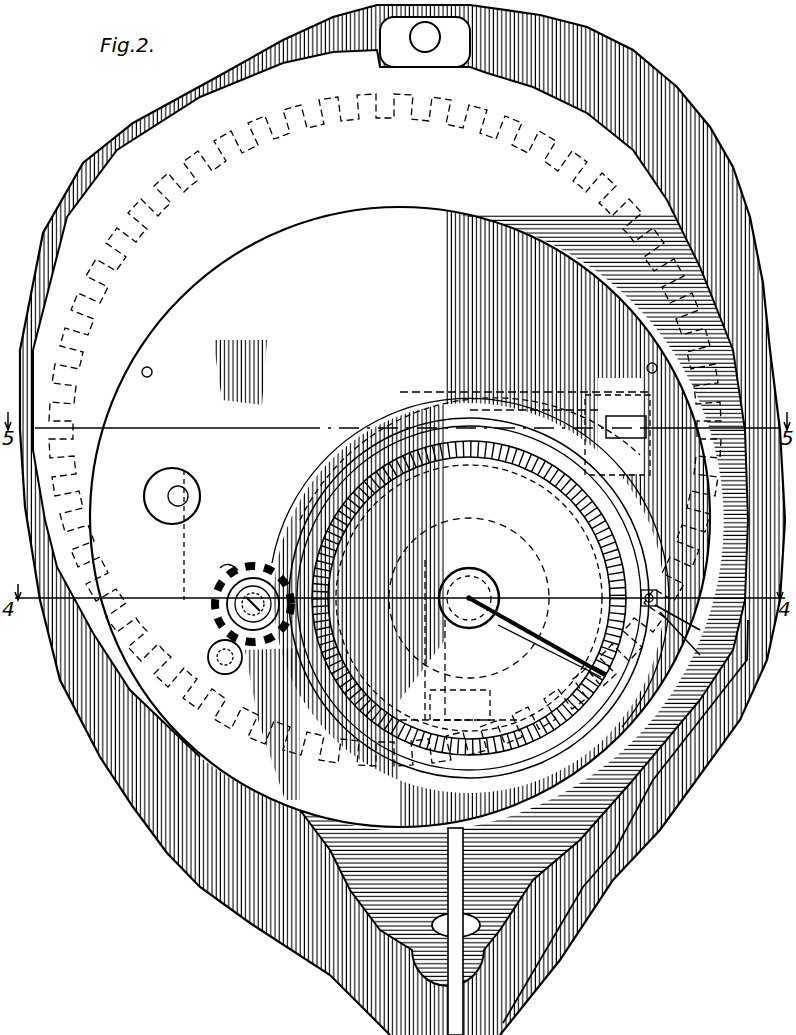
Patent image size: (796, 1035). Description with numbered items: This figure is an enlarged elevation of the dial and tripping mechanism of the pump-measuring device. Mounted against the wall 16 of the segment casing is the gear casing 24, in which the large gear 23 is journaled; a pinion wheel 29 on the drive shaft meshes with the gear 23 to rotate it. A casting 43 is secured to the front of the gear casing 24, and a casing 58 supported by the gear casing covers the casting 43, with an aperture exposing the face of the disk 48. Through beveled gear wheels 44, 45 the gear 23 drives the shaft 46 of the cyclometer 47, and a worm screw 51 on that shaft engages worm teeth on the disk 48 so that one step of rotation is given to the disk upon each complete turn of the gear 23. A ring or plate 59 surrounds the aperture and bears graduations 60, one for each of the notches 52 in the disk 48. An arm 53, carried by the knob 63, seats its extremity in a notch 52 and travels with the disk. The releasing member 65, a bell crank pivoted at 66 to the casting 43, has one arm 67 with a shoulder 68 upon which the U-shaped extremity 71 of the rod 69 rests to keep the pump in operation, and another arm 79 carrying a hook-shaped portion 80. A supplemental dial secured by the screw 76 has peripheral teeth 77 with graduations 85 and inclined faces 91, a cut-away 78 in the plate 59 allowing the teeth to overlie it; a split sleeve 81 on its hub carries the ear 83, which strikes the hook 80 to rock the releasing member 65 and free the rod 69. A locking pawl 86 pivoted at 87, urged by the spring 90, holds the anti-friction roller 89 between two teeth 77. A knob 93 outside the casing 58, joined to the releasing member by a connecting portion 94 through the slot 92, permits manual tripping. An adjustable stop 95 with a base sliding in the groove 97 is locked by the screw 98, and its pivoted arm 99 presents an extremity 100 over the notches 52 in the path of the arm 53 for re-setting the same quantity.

The wall 16 is at (656, 70).
The casing 24 is at (637, 150).
The gear 23 is at (641, 207).
The casing 58 is at (262, 252).
The shaft 46 is at (600, 402).
The cyclometer 47 is at (617, 412).
The worm screw 51 is at (548, 403).
The gear wheel 44 is at (380, 400).
The gear wheel 45 is at (456, 402).
The disk 48 is at (610, 600).
The arm 67 is at (420, 562).
The operating handle or knob 63 is at (483, 582).
The arm 53 is at (546, 602).
The extremity 100 is at (628, 590).
The rod or bar 69 is at (522, 690).
The releasing member 65 is at (445, 500).
The pivotal support 66 is at (432, 517).
The notches 52 is at (511, 520).
The casting 43 is at (544, 527).
The stop 95 is at (652, 596).
The screw 98 is at (700, 630).
The arm 99 is at (700, 655).
The groove 97 is at (632, 760).
The slot 92 is at (208, 474).
The handle or knob 93 is at (228, 472).
The connecting portion 94 is at (200, 490).
The arm 79 is at (270, 530).
The cut away 78 is at (326, 548).
The ring or plate 59 is at (330, 460).
The graduations 60 is at (355, 472).
The graduation 85 is at (287, 607).
The peripheral teeth 77 is at (240, 566).
The inclined faces 91 is at (206, 574).
The hook-shaped portion 80 is at (202, 598).
The ear 83 is at (215, 608).
The split sleeve or holder 81 is at (232, 628).
The anti-friction roller 89 is at (208, 657).
The locking pawl 86 is at (240, 714).
The pivot 87 is at (332, 628).
The screw or bolt 76 is at (312, 586).
The yielding member 90 is at (332, 766).
The U-shaped extremity 71 is at (400, 790).
The shoulder or offset portion 68 is at (386, 848).
The pinion wheel 29 is at (418, 878).